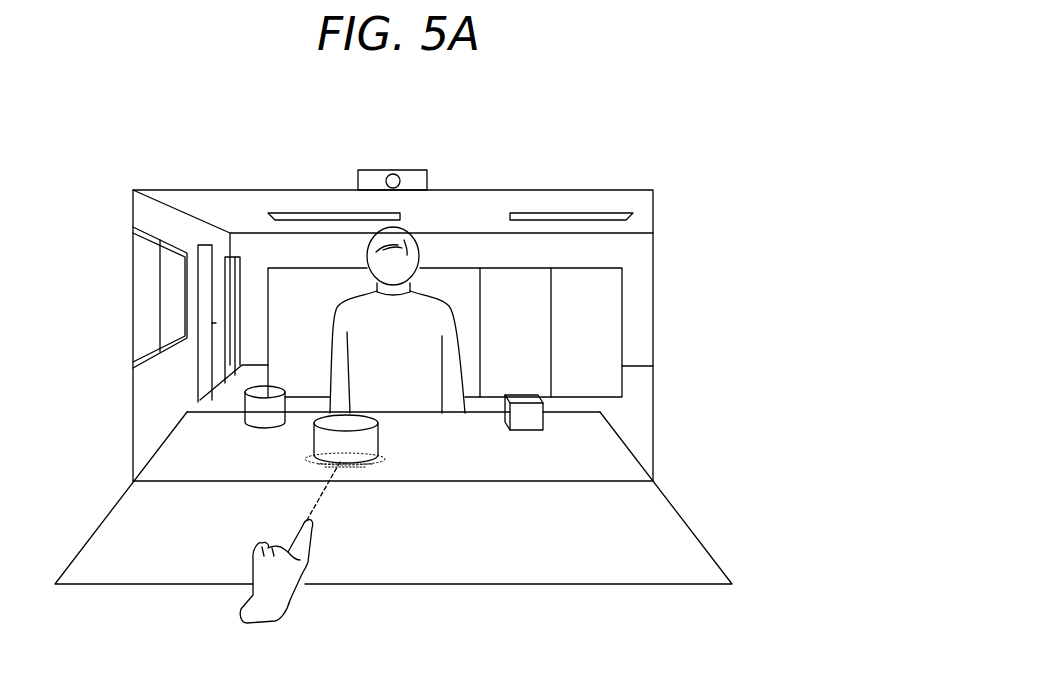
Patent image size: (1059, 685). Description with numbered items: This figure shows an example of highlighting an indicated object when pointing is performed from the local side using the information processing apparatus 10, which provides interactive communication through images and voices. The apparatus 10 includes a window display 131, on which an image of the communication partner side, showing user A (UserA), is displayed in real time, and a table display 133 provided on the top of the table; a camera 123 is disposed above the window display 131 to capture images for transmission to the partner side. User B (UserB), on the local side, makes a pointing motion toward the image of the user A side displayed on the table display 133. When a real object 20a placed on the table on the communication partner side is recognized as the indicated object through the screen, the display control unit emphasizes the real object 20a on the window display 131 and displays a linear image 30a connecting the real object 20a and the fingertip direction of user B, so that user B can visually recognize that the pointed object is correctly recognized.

The information processing apparatus 10 is at (605, 162).
The camera 123 is at (404, 170).
The window display 131 is at (653, 222).
The table display 133 is at (682, 515).
The real object 20a is at (313, 440).
The linear image 30a is at (335, 463).
The user A UserA is at (368, 246).
The user B UserB is at (283, 609).